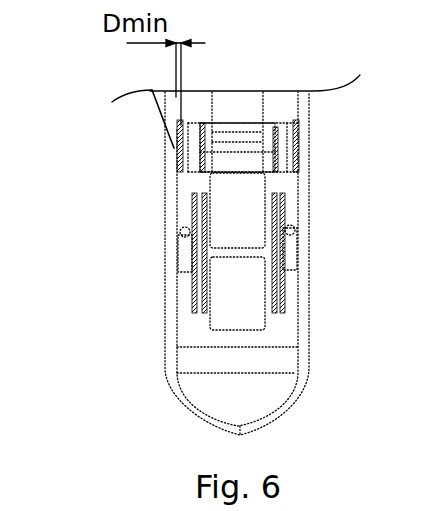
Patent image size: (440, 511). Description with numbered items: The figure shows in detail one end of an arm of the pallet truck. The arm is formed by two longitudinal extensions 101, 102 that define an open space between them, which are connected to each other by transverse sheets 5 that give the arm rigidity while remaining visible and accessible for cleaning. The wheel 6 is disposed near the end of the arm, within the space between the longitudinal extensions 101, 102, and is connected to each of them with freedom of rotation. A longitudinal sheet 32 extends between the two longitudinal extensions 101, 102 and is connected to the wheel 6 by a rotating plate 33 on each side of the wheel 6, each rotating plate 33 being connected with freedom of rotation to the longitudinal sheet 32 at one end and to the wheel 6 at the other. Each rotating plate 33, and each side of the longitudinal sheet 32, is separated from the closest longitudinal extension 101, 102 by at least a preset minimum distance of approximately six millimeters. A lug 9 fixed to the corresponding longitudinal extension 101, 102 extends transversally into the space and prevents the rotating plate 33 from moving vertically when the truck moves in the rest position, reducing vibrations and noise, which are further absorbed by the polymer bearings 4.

The polymer bearing 4 is at (152, 90).
The transverse sheet 5 is at (275, 359).
The wheel 6 is at (230, 302).
The lug 9 is at (182, 230).
The longitudinal sheet 32 is at (240, 112).
The rotating plate 33 is at (288, 148).
The longitudinal extension 101 is at (167, 160).
The longitudinal extension 102 is at (300, 195).